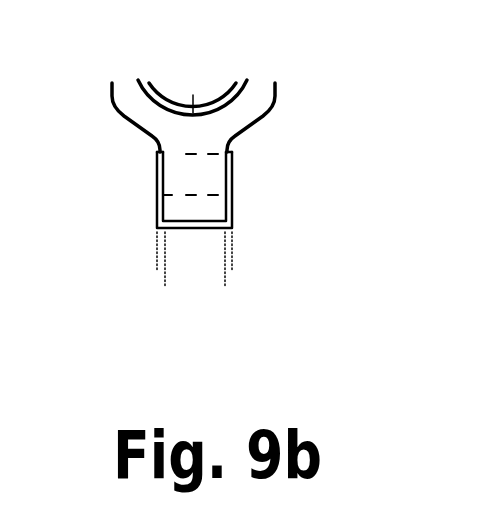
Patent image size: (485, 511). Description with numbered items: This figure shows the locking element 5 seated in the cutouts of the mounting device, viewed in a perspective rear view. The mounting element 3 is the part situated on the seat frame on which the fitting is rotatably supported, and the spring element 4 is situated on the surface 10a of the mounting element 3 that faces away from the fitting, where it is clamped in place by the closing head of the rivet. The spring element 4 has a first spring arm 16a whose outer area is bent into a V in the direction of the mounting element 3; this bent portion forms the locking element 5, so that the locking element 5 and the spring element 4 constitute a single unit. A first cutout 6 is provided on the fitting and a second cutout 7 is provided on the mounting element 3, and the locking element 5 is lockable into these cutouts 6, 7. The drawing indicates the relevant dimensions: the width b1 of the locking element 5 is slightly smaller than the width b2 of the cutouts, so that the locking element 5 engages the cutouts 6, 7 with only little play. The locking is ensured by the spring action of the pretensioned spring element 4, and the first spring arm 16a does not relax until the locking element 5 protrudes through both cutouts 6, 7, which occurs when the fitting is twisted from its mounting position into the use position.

The mounting element 3 is at (80, 90).
The spring element 4 is at (250, 102).
The locking element 5 is at (210, 183).
The first cutout 6 is at (230, 210).
The second cutout 7 is at (253, 190).
The surface of the mounting element 10a is at (131, 183).
The first spring arm 16a is at (176, 145).
The width of the locking element b1 is at (224, 280).
The width of the cutouts b2 is at (130, 263).